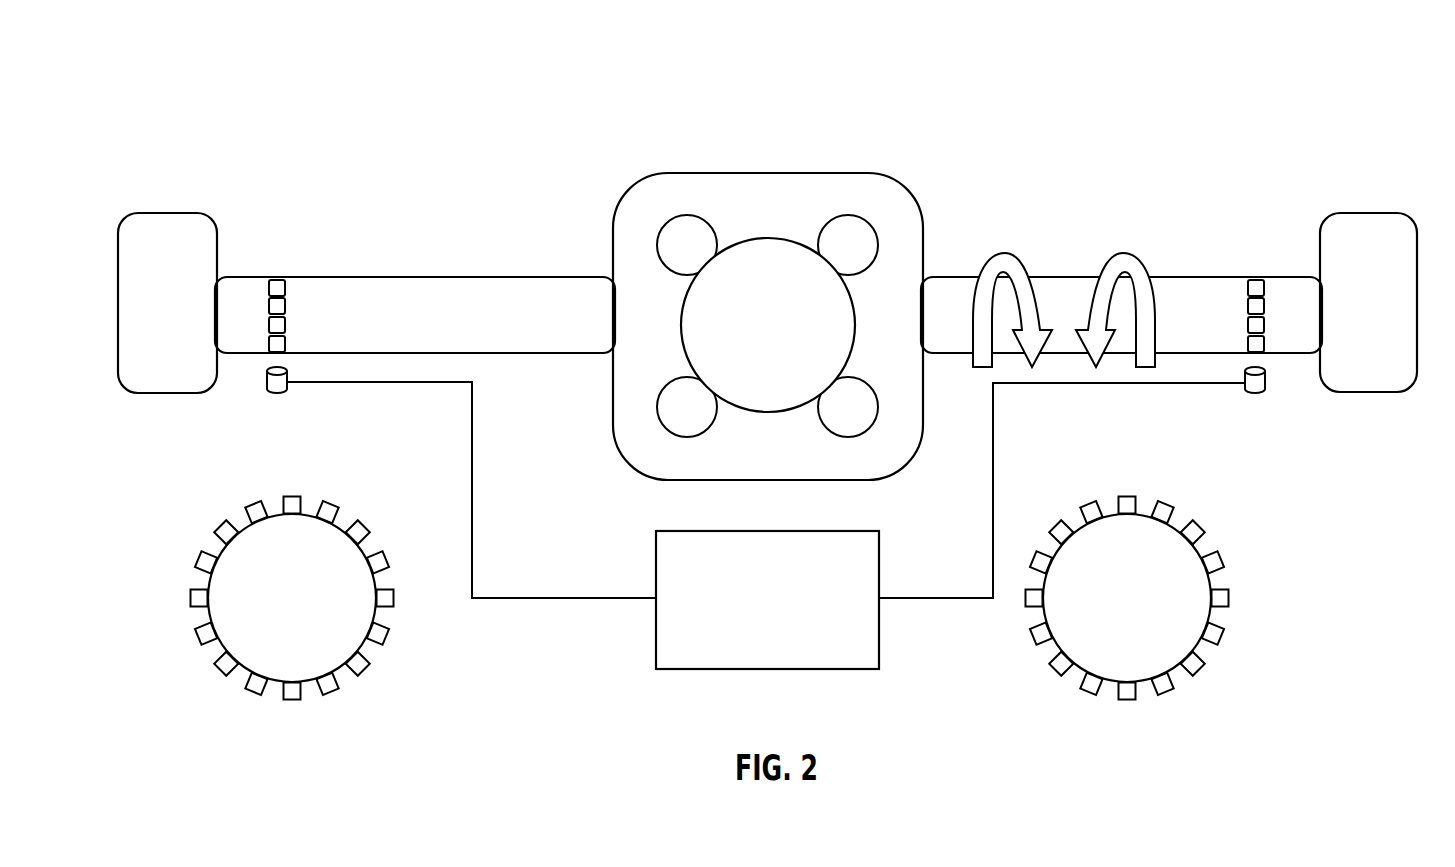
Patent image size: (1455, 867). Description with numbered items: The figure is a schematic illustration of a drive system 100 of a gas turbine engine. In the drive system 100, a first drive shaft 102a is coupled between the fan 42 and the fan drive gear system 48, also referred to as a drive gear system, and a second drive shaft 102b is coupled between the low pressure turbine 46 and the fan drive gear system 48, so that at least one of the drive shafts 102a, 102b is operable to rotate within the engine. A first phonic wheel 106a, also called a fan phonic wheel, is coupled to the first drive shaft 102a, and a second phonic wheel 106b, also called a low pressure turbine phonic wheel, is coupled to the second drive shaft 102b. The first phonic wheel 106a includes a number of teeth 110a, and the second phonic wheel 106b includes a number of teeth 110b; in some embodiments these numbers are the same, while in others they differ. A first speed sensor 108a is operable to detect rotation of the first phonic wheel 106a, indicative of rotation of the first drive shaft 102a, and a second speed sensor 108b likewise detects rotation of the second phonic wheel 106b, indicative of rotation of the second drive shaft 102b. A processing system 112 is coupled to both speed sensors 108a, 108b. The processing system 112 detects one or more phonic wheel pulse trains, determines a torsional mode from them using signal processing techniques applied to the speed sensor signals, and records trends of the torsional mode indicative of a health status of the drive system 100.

The drive system 100 is at (861, 81).
The fan 42 is at (137, 213).
The low pressure turbine 46 is at (1398, 213).
The fan drive gear system 48 is at (671, 173).
The first drive shaft 102a is at (413, 277).
The second drive shaft 102b is at (1068, 277).
The first phonic wheel 106a is at (278, 278).
The second phonic wheel 106b is at (1255, 278).
The first speed sensor 108a is at (275, 394).
The second speed sensor 108b is at (1258, 394).
The teeth 110a is at (225, 668).
The teeth 110b is at (1060, 668).
The processing system 112 is at (692, 531).